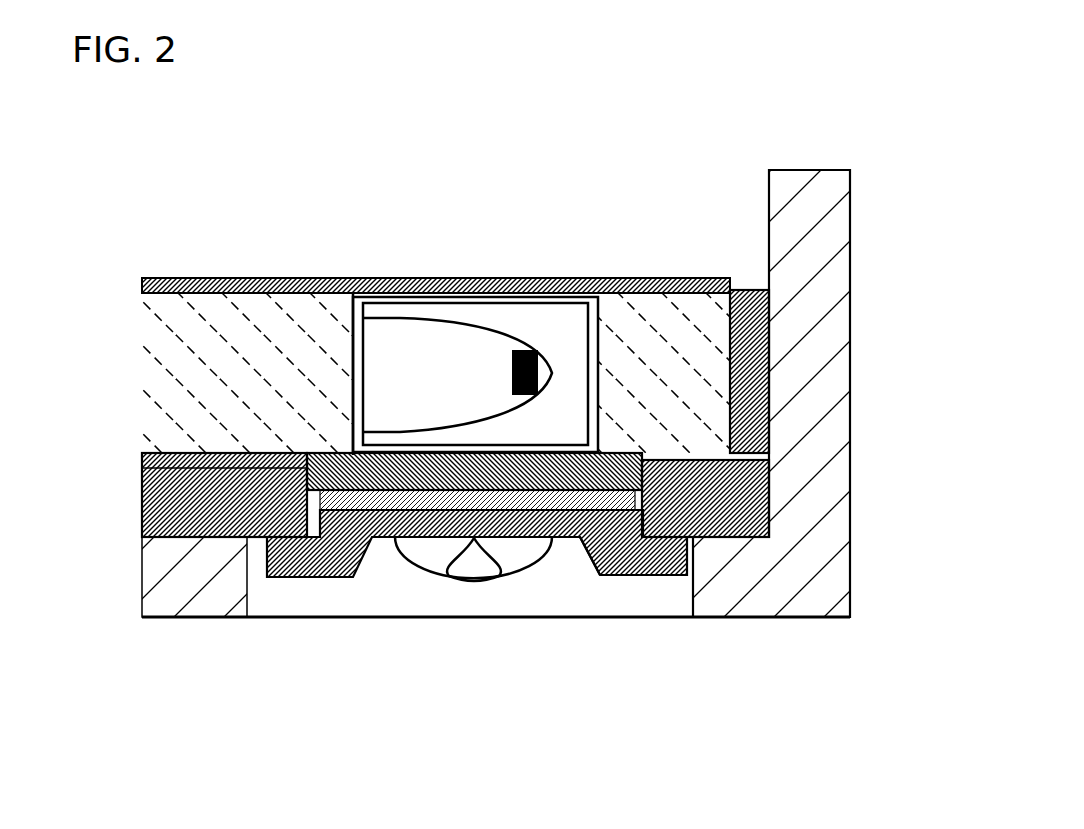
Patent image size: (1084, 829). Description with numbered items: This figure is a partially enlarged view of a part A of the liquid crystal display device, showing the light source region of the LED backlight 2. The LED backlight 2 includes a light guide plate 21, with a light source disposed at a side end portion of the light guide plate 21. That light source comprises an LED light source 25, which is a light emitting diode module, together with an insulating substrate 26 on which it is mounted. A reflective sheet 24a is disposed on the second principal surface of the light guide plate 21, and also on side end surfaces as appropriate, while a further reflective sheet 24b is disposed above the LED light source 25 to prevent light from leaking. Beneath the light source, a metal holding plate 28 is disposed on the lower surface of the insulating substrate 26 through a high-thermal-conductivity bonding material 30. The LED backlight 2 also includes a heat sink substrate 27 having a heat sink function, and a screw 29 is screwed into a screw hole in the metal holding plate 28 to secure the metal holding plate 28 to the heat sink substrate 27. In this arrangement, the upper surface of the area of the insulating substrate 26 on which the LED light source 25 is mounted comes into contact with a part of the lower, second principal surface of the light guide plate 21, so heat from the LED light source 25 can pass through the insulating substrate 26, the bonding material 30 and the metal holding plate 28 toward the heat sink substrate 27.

The LED backlight 2 is at (125, 660).
The part A is at (736, 118).
The light guide plate 21 is at (189, 325).
The reflective sheet 24a is at (160, 453).
The reflective sheet 24b is at (360, 278).
The LED light source 25 is at (500, 315).
The insulating substrate 26 is at (618, 453).
The heat sink substrate 27 is at (218, 540).
The metal holding plate 28 is at (347, 577).
The screw 29 is at (474, 553).
The high-thermal-conductivity bonding material 30 is at (578, 540).